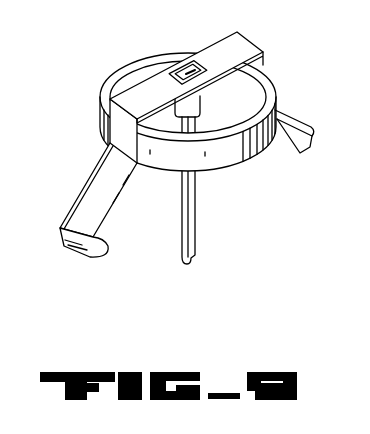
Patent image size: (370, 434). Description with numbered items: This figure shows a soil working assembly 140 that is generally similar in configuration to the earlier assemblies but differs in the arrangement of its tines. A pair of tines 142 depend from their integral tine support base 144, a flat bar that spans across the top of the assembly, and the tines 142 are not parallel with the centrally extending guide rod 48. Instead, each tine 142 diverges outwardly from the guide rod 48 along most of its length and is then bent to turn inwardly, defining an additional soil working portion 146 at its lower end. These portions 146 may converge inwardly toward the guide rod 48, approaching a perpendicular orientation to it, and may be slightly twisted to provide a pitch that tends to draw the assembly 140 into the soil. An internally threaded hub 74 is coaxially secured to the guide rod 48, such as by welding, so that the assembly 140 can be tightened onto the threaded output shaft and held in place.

The soil working assembly 140 is at (186, 138).
The tine support base 144 is at (217, 57).
The tines 142 is at (85, 199).
The additional soil working portion 146 is at (108, 249).
The internally threaded hub 74 is at (188, 112).
The guide rod 48 is at (184, 236).